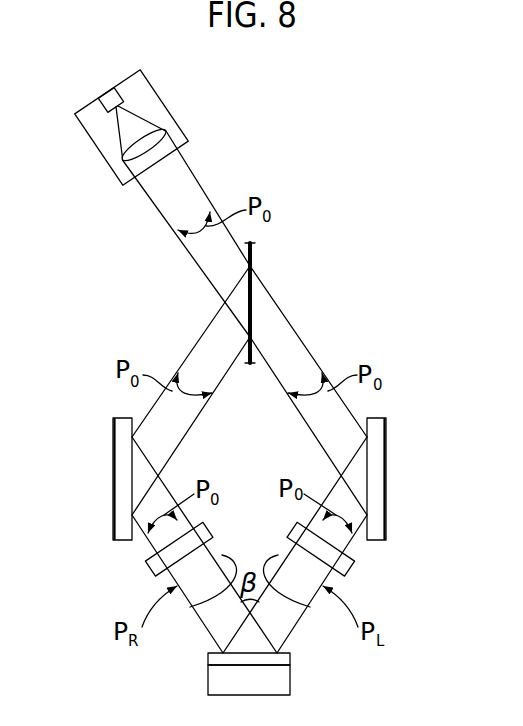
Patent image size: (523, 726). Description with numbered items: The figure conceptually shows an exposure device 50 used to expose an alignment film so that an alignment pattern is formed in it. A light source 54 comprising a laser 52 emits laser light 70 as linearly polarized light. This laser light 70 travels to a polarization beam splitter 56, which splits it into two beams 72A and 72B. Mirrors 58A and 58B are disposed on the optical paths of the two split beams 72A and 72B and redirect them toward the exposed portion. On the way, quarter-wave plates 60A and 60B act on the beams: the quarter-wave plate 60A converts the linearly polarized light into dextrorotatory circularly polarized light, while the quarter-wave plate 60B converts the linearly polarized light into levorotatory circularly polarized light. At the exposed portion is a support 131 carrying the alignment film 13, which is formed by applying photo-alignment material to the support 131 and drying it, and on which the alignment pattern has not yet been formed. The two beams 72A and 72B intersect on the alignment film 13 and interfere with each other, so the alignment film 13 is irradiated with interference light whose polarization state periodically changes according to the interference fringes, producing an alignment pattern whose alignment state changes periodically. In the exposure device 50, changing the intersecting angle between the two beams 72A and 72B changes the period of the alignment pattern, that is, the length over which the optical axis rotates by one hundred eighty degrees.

The exposure device 50 is at (391, 176).
The laser 52 is at (109, 92).
The light source 54 is at (163, 100).
The laser light 70 is at (200, 183).
The polarization beam splitter 56 is at (253, 250).
The beam 72A is at (195, 345).
The beam 72B is at (305, 345).
The mirror 58A is at (113, 427).
The mirror 58B is at (386, 427).
The λ/4 plate 60A is at (145, 565).
The λ/4 plate 60B is at (355, 565).
The alignment film 13 is at (290, 657).
The support 131 is at (290, 683).